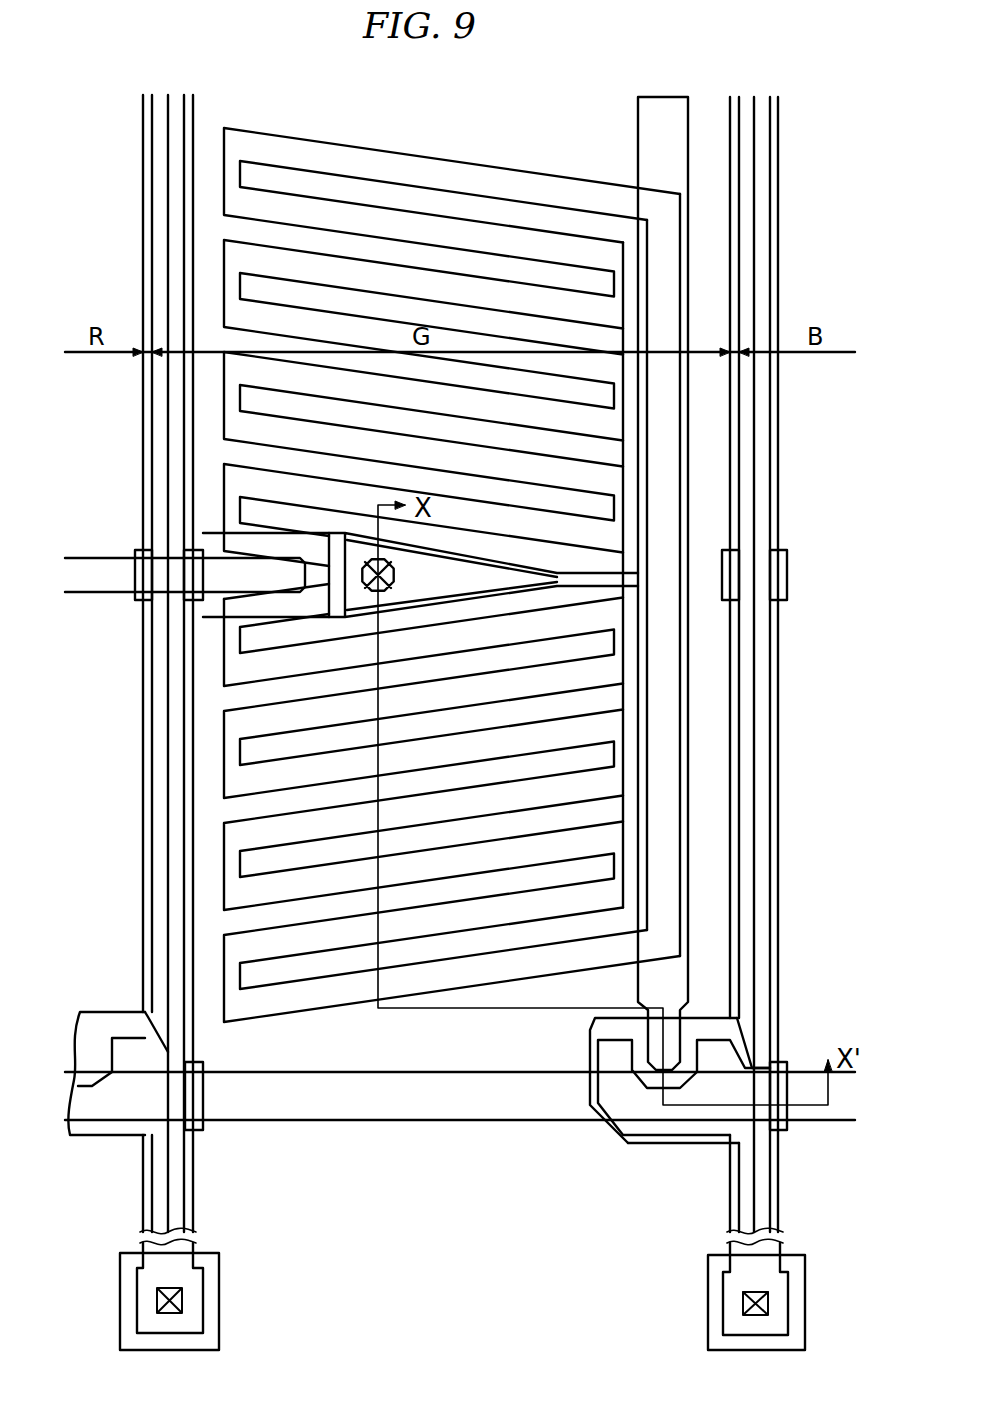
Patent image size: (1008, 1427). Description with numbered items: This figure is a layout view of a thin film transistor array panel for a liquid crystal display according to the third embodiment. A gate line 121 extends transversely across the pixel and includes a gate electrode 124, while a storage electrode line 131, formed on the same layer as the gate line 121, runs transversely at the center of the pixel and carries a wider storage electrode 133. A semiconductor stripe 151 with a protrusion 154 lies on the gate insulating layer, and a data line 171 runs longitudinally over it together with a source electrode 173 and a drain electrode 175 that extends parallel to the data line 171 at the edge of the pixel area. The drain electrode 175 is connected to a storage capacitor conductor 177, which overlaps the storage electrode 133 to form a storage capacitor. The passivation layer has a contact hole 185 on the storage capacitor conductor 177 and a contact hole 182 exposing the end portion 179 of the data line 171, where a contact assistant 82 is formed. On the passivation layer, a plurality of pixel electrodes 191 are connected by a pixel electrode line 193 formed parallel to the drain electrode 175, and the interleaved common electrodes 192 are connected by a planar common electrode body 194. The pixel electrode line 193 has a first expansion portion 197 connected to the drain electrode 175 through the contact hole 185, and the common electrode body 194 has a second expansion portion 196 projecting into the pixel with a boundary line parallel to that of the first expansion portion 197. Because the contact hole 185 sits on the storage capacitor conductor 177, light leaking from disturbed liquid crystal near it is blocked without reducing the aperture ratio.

The contact assistant 82 is at (805, 1335).
The gate line 121 is at (398, 1122).
The gate electrode 124 is at (588, 1062).
The storage electrode line 131 is at (318, 535).
The storage electrode 133 is at (98, 594).
The semiconductor stripe 151 is at (778, 776).
The protrusion 154 is at (668, 1145).
The data line 171 is at (779, 822).
The source electrode 173 is at (617, 1130).
The drain electrode 175 is at (690, 700).
The storage capacitor conductor 177 is at (343, 527).
The end portion of the data line 179 is at (790, 1290).
The contact hole 182 is at (768, 1303).
The contact hole 185 is at (370, 593).
The pixel electrode 191 is at (347, 177).
The common electrode 192 is at (291, 224).
The pixel electrode line 193 is at (648, 300).
The common electrode body 194 is at (523, 113).
The second expansion portion 196 is at (250, 597).
The first expansion portion 197 is at (367, 537).